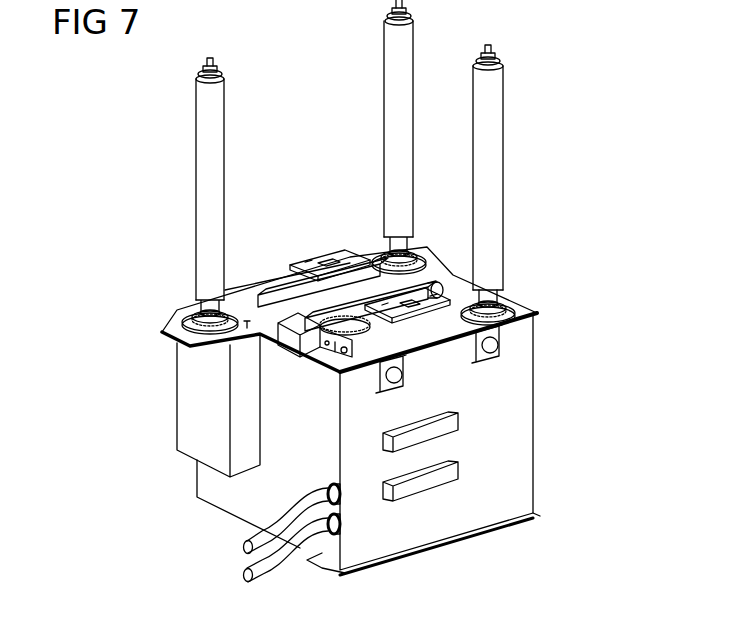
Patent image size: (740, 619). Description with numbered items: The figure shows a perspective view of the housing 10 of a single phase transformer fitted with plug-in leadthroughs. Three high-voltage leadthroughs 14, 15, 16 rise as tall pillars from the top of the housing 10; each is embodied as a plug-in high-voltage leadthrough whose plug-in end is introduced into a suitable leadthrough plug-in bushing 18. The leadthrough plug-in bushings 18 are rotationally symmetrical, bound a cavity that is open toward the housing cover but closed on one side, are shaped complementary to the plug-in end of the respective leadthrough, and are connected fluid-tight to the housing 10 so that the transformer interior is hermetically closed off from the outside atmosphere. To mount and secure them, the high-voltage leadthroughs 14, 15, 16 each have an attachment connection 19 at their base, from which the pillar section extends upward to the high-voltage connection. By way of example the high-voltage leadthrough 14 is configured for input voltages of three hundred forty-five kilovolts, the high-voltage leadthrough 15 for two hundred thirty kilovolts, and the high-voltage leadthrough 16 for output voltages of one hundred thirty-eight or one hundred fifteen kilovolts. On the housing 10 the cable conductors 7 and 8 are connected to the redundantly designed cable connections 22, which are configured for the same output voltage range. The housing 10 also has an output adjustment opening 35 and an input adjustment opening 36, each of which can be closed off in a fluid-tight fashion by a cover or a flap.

The housing 10 is at (562, 412).
The high-voltage leadthrough 14 is at (196, 170).
The high-voltage leadthrough 15 is at (384, 133).
The high-voltage leadthrough 16 is at (503, 170).
The leadthrough plug-in bushing 18 is at (512, 308).
The attachment connection 19 is at (498, 300).
The output adjustment opening 35 is at (385, 310).
The input adjustment opening 36 is at (304, 266).
The cable conductor 7 is at (243, 547).
The cable conductor 8 is at (243, 575).
The cable connection 22 is at (335, 498).